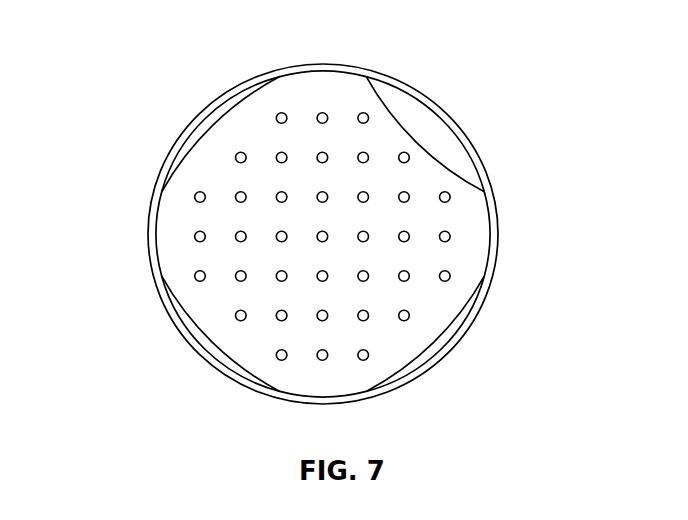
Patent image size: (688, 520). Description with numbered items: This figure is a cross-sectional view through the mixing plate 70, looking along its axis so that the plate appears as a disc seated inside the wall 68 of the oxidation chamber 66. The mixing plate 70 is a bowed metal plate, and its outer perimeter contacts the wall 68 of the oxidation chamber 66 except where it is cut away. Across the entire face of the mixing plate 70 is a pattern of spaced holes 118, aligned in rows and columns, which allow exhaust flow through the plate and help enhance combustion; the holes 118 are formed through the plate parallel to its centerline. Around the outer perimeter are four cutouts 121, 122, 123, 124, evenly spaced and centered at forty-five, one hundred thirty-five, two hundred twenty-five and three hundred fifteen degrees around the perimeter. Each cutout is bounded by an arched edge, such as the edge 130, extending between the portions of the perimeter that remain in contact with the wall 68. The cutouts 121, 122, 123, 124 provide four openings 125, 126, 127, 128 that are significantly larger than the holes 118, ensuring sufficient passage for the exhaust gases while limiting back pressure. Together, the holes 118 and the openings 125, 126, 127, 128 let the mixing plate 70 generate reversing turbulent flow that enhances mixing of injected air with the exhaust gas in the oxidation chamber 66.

The oxidation chamber 66 is at (467, 170).
The wall 68 is at (356, 67).
The mixing plate 70 is at (465, 227).
The holes 118 is at (276, 239).
The cutout 121 is at (428, 158).
The cutout 122 is at (453, 300).
The cutout 123 is at (168, 292).
The cutout 124 is at (256, 104).
The opening 125 is at (417, 124).
The opening 126 is at (412, 363).
The opening 127 is at (217, 345).
The opening 128 is at (212, 140).
The arched edge 130 is at (402, 87).